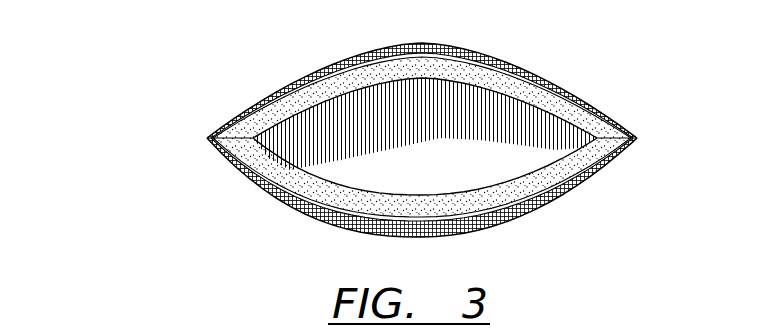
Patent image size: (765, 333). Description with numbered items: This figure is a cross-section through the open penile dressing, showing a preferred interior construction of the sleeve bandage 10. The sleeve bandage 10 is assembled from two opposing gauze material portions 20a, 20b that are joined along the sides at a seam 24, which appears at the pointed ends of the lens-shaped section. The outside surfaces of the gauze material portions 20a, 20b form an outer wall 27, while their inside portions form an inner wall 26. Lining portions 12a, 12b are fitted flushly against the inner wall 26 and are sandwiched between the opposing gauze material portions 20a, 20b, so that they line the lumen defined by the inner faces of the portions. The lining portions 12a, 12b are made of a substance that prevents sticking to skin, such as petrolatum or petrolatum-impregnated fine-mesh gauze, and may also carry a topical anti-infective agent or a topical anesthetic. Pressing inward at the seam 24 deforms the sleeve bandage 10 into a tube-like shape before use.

The sleeve bandage 10 is at (193, 67).
The lining portion 12a is at (272, 170).
The lining portion 12b is at (556, 92).
The gauze material portion 20a is at (283, 205).
The gauze material portion 20b is at (505, 52).
The seam 24 is at (207, 138).
The inner wall 26 is at (364, 58).
The outer wall 27 is at (288, 82).